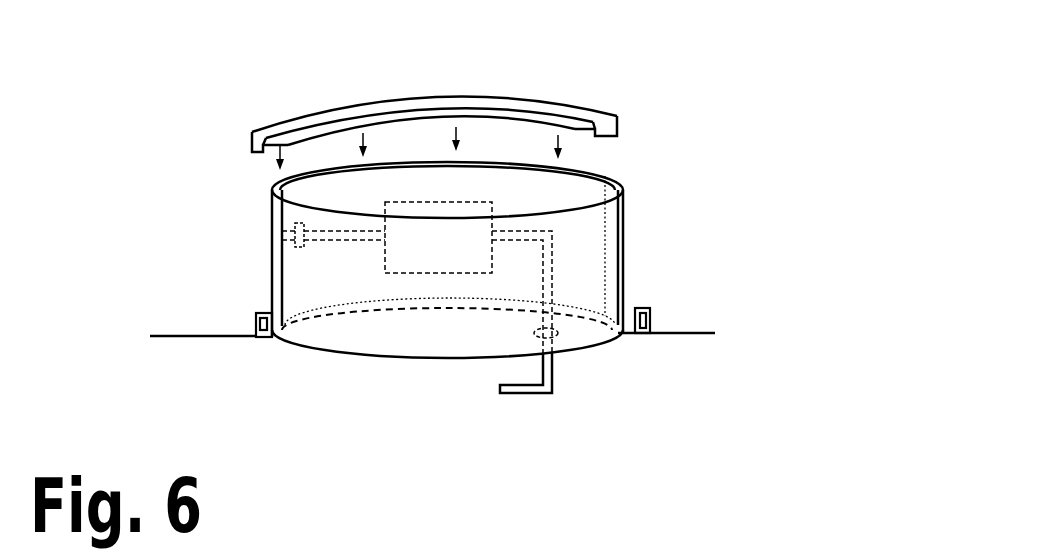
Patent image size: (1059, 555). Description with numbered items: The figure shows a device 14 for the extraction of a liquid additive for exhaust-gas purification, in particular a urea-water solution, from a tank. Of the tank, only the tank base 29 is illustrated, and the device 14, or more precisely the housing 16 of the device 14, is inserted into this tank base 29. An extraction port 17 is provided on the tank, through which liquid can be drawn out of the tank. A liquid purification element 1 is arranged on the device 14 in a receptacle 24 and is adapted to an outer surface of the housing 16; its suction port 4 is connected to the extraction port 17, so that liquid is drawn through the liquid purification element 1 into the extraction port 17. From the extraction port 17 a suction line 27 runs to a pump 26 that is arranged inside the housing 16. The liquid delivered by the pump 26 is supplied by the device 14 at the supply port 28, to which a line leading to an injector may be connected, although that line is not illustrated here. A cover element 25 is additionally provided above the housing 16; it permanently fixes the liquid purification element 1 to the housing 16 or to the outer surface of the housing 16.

The liquid purification element 1 is at (272, 210).
The suction port 4 is at (288, 237).
The device 14 is at (692, 118).
The housing 16 is at (620, 257).
The extraction port 17 is at (299, 248).
The receptacle 24 is at (652, 318).
The cover element 25 is at (588, 110).
The pump 26 is at (440, 273).
The suction line 27 is at (335, 240).
The supply port 28 is at (500, 389).
The tank base 29 is at (685, 335).